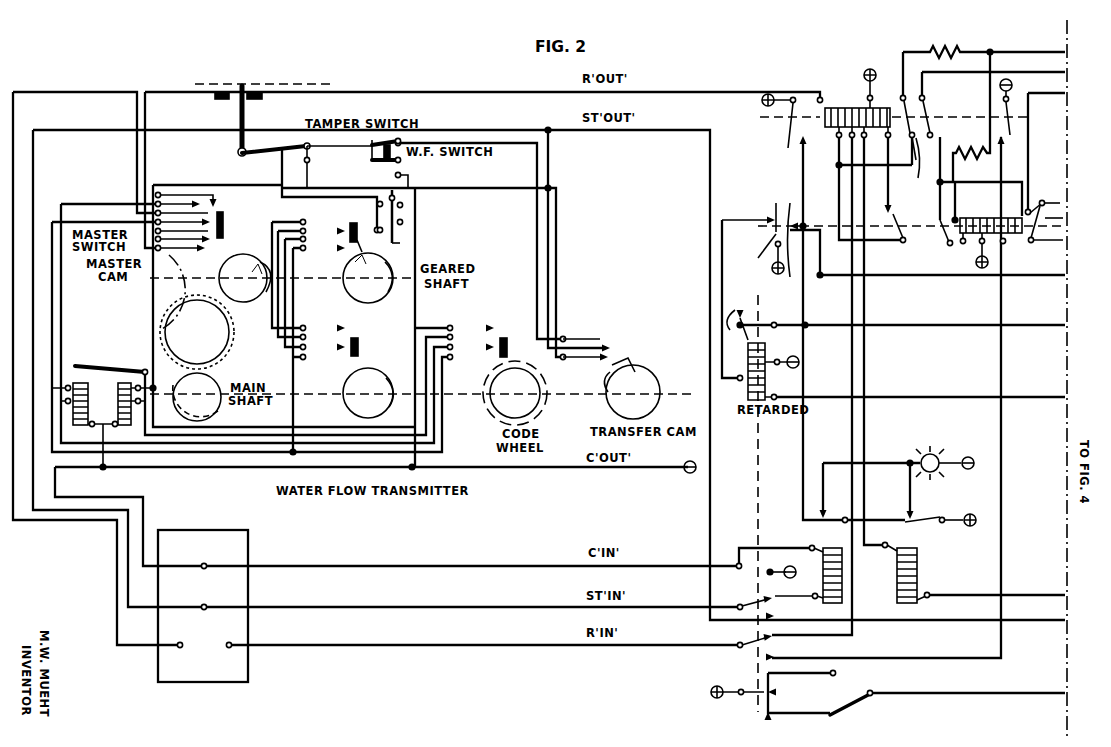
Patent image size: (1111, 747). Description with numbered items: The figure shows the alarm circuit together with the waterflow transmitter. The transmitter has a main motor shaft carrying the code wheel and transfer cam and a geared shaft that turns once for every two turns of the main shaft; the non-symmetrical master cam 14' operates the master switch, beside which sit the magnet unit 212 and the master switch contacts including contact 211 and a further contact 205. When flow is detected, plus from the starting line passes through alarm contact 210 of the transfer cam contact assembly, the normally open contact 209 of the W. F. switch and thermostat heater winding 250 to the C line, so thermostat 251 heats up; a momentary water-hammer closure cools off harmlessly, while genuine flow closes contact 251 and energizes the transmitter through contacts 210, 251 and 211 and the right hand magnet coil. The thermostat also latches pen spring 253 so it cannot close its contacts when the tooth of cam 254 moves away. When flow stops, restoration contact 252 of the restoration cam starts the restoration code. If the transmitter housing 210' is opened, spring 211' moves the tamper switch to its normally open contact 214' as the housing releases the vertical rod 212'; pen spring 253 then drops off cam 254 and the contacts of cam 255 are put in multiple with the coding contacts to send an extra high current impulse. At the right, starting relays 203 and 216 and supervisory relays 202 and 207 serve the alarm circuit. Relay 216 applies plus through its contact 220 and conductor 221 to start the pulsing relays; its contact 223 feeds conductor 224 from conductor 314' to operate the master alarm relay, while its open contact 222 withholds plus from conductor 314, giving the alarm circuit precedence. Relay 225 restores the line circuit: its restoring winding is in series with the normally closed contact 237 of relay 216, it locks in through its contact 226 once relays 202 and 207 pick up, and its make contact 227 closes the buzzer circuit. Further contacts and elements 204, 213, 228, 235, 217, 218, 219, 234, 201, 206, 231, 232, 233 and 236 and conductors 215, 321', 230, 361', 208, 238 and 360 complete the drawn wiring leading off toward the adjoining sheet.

The transmitter housing 210' is at (253, 73).
The vertical rod 212' is at (226, 121).
The spring 211' is at (321, 135).
The tamper switch contact 214' is at (327, 167).
The W. F. switch contact 209 is at (400, 175).
The thermostat heater winding 250 is at (402, 212).
The thermostat 251 is at (398, 243).
The master switch contact 205 is at (232, 183).
The contact of relay 225 226 is at (224, 214).
The master switch contact 211 is at (210, 230).
The relay 225 is at (190, 276).
The master cam 14' is at (213, 358).
The relay 212 is at (102, 404).
The pen spring 253 is at (345, 255).
The cam 254 is at (368, 293).
The cam 255 is at (350, 404).
The alarm contact of transfer cam contact assembly 210 is at (613, 345).
The restoration contact 252 is at (612, 365).
The starting relay 203 is at (850, 100).
The relay contact 204 is at (887, 235).
The relay contact 213 is at (905, 150).
The switch contact 228 is at (797, 146).
The resistor line 215 is at (1010, 50).
The conductor 321' is at (992, 77).
The switch 235 is at (928, 128).
The make contact of relay 225 227 is at (772, 688).
The switch 217 is at (900, 368).
The resistor 219 is at (971, 117).
The relay contact 218 is at (953, 218).
The relay 216 is at (991, 233).
The relay contact 234 is at (935, 243).
The conductor 224 is at (893, 183).
The contact of relay 216 223 is at (1036, 205).
The contact of relay 216 222 is at (1048, 201).
The conductor 314 is at (1055, 228).
The conductor 314' is at (1045, 236).
The conductor 221 is at (927, 263).
The normally closed contact of relay 216 237 is at (753, 248).
The contact of relay 216 220 is at (789, 246).
The conductor 230 is at (1010, 324).
The conductor 361' is at (920, 388).
The supervisory relay 202 is at (821, 556).
The relay contact 232 is at (758, 577).
The relay contact 201 is at (762, 600).
The relay contact 231 is at (776, 616).
The relay contact 206 is at (762, 639).
The relay contact 233 is at (776, 658).
The supervisory relay 207 is at (919, 560).
The conductor 208 is at (1010, 594).
The conductor 238 is at (1010, 619).
The switch 236 is at (775, 707).
The conductor 360 is at (1010, 692).